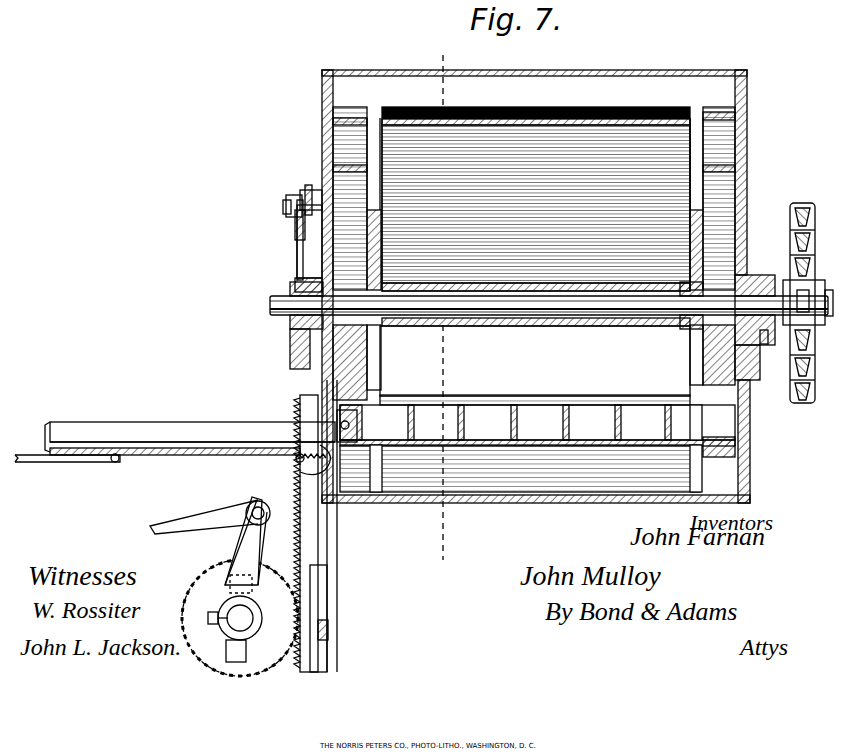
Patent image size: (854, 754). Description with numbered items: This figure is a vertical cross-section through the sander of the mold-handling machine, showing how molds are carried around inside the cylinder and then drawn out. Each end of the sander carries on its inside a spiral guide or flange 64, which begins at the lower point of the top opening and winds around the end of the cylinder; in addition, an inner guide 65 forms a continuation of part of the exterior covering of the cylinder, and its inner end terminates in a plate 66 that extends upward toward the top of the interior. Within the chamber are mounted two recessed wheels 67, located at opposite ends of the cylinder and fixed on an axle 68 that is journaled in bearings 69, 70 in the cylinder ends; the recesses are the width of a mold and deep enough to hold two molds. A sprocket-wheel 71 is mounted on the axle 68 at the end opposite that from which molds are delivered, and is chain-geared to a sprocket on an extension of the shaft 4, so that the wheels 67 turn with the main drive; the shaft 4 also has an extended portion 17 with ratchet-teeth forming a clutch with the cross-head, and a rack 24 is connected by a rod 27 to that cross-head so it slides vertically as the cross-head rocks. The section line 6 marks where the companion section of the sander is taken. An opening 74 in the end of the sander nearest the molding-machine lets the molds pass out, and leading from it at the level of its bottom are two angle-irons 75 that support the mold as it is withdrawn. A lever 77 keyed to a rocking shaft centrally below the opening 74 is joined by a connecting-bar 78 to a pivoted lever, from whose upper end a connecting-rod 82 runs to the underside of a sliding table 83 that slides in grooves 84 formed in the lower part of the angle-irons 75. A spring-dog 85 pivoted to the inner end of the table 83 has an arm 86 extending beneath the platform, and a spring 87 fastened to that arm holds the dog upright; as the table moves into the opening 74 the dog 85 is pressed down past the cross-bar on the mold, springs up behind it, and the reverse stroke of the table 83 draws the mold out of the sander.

The shaft 4 is at (286, 207).
The section line 6 is at (437, 299).
The extended portion 17 is at (316, 193).
The rack 24 is at (300, 478).
The rod 27 is at (297, 250).
The spiral guide 64 is at (322, 145).
The guide 65 is at (540, 128).
The plate 66 is at (549, 284).
The wheel 67 is at (296, 232).
The axle 68 is at (728, 298).
The bearing 69 is at (297, 285).
The bearing 70 is at (762, 278).
The sprocket-wheel 71 is at (800, 206).
The opening 74 is at (380, 400).
The angle-iron 75 is at (163, 432).
The lever 77 is at (246, 528).
The connecting-bar 78 is at (165, 530).
The connecting-rod 82 is at (42, 458).
The sliding table 83 is at (190, 455).
The groove 84 is at (45, 440).
The spring-dog 85 is at (340, 458).
The arm 86 is at (325, 462).
The spring 87 is at (300, 452).